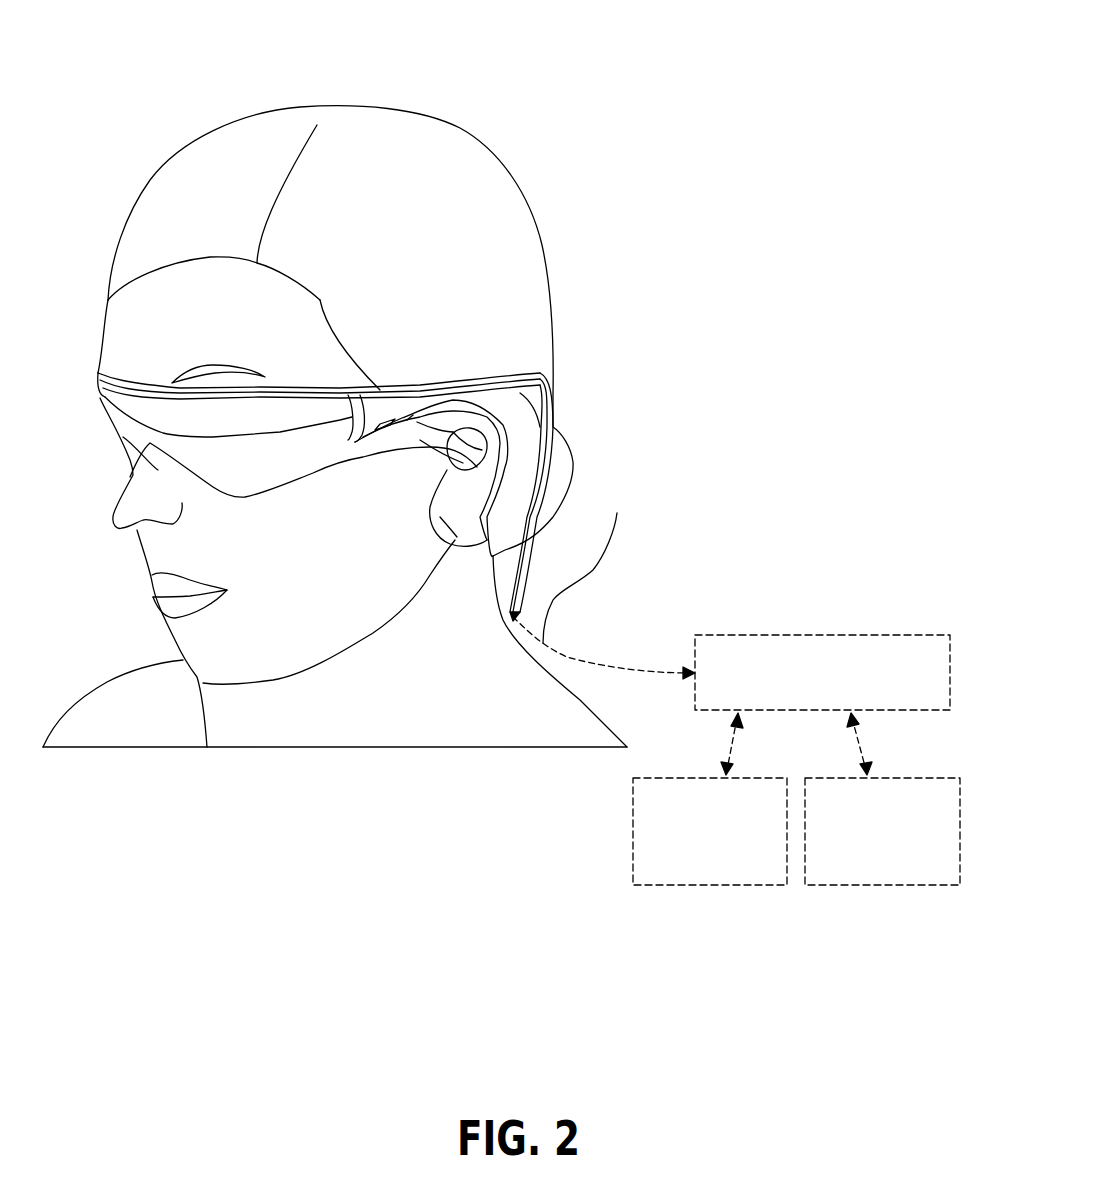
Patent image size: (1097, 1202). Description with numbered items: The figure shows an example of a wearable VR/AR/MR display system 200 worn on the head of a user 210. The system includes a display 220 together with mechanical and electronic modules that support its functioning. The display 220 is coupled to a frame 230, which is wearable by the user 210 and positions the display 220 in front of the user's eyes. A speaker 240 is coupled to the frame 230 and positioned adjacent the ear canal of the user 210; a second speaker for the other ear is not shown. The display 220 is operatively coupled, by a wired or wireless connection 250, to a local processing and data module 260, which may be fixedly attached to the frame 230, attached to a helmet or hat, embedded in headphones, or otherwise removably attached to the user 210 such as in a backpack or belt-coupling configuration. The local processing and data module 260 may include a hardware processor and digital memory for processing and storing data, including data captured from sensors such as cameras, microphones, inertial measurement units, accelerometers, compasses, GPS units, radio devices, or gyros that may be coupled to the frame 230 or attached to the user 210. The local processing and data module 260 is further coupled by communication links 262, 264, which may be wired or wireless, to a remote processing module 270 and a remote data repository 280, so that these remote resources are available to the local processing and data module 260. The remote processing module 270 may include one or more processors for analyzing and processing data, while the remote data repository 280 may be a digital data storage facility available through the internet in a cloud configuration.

The wearable VR/AR/MR display system 200 is at (718, 118).
The user 210 is at (198, 180).
The display 220 is at (123, 437).
The frame 230 is at (418, 385).
The speaker 240 is at (555, 440).
The wired or wireless connection 250 is at (505, 543).
The local processing and data module 260 is at (765, 635).
The communication link 262 is at (732, 743).
The communication link 264 is at (862, 743).
The remote processing module 270 is at (690, 885).
The remote data repository 280 is at (838, 885).